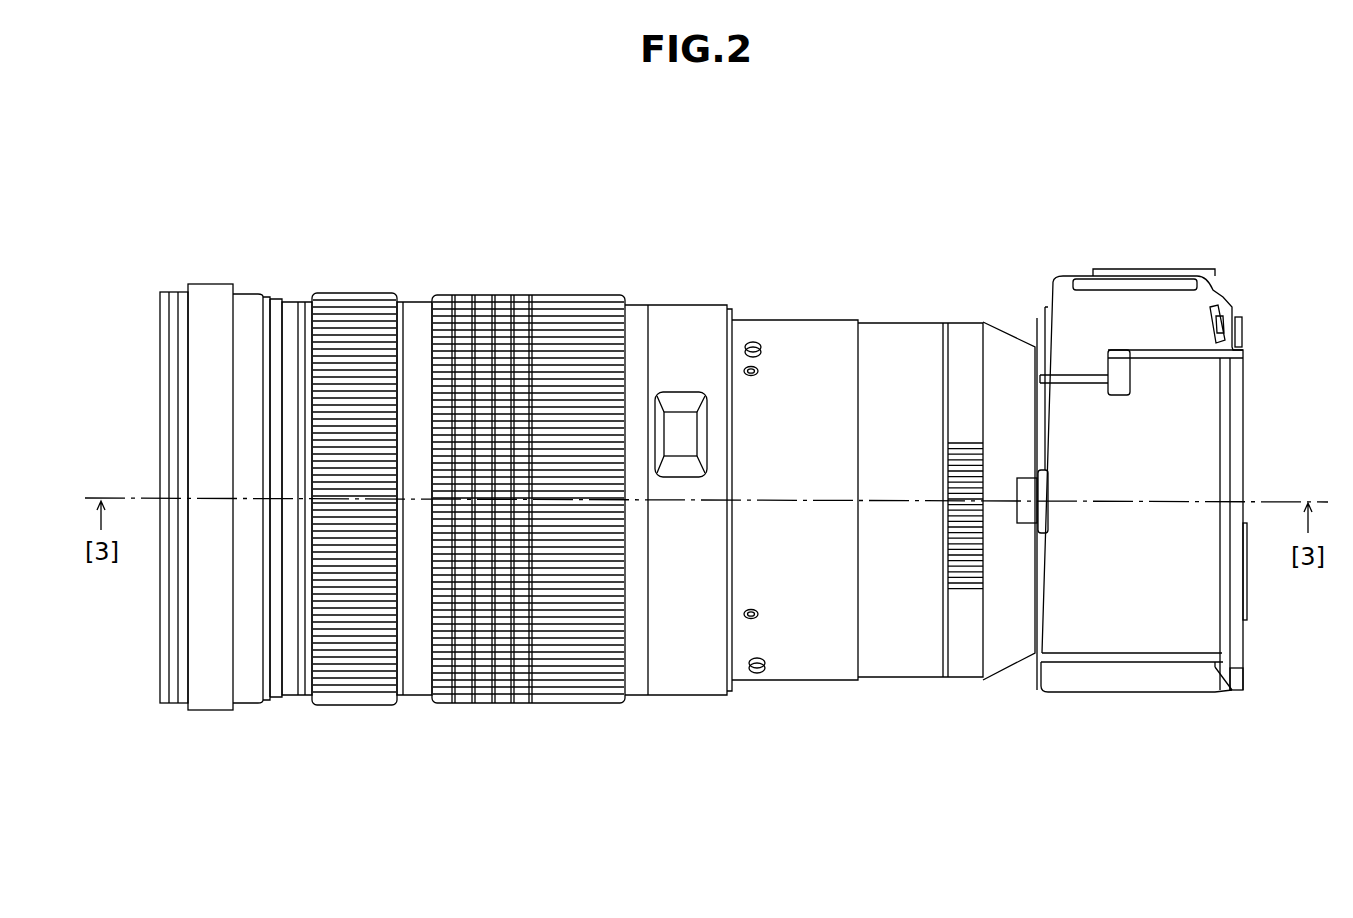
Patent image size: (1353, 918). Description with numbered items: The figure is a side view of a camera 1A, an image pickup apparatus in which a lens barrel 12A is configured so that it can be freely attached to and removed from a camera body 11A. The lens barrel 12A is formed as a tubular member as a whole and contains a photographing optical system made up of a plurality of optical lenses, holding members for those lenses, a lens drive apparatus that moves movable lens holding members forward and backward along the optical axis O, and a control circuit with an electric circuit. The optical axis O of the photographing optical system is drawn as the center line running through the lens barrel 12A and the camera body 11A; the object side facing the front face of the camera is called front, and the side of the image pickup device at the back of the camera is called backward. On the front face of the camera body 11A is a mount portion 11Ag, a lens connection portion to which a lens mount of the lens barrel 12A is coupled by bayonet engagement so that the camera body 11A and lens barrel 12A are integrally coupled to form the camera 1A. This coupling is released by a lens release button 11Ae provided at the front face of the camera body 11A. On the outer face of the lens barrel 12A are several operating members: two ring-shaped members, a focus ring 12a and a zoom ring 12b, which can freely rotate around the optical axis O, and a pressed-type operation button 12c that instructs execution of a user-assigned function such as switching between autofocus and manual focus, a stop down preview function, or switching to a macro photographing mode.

The camera 1A is at (1030, 179).
The camera body 11A is at (1140, 305).
The lens release button 11Ae is at (1022, 487).
The mount portion 11Ag is at (1035, 632).
The lens barrel 12A is at (801, 294).
The focus ring 12a is at (358, 312).
The zoom ring 12b is at (566, 312).
The operation button 12c is at (680, 420).
The optical axis O is at (128, 498).